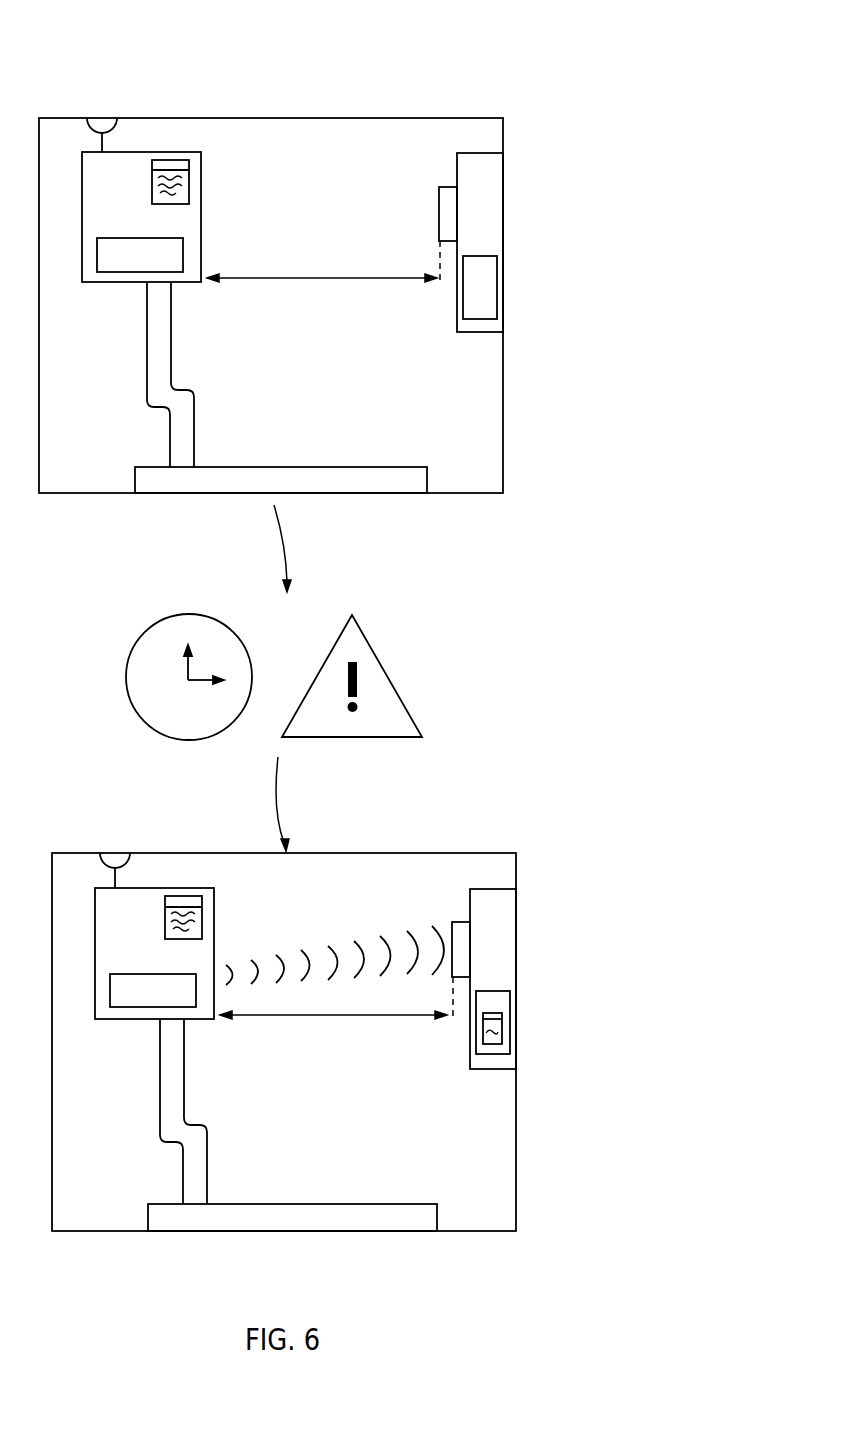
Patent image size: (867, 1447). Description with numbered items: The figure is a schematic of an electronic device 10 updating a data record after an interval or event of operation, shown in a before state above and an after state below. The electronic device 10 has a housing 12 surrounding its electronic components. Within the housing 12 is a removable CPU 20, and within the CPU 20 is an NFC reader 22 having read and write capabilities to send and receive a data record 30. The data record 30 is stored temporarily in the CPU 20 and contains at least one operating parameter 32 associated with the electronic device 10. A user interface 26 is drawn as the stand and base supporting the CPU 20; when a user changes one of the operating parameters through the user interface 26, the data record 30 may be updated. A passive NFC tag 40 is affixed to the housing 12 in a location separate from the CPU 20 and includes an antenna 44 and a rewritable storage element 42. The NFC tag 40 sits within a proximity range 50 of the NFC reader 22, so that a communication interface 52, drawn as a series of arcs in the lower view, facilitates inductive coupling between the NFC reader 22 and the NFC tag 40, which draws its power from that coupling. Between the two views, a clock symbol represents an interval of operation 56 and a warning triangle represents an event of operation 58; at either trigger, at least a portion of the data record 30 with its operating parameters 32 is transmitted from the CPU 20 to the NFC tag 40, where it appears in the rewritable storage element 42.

The electronic device 10 is at (467, 58).
The housing 12 is at (59, 116).
The removable CPU 20 is at (145, 223).
The NFC reader 22 is at (146, 622).
The user interface 26 is at (410, 497).
The data record 30 is at (182, 162).
The operating parameter 32 is at (187, 177).
The passive NFC tag 40 is at (467, 218).
The rewritable storage element 42 is at (467, 288).
The antenna 44 is at (445, 192).
The proximity range 50 is at (327, 284).
The communication interface 52 is at (342, 945).
The interval of operation 56 is at (143, 623).
The event of operation 58 is at (377, 634).